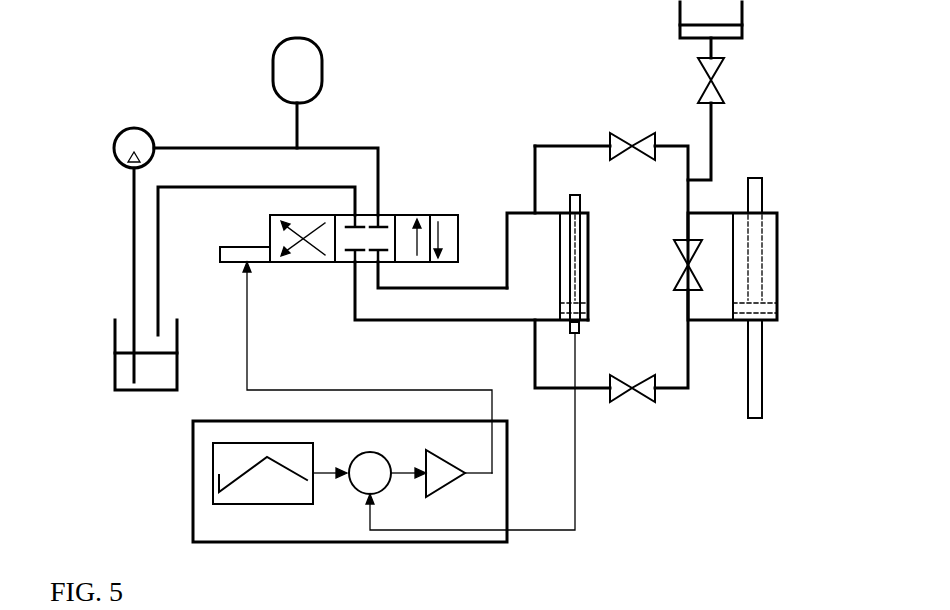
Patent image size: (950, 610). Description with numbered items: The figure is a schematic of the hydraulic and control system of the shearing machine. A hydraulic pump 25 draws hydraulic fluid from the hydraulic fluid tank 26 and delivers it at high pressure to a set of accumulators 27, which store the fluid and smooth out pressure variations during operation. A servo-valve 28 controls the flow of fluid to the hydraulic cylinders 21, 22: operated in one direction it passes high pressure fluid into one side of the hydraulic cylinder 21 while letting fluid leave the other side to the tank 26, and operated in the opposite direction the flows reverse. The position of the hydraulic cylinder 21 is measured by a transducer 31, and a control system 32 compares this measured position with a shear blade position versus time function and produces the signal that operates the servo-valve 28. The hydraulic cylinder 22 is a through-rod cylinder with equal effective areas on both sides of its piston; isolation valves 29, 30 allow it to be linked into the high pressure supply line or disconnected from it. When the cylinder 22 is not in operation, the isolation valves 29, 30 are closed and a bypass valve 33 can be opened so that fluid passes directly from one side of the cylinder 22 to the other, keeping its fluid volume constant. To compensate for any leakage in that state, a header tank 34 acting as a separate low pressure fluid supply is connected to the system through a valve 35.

The hydraulic cylinder 21 is at (568, 255).
The hydraulic cylinder 22 is at (752, 298).
The hydraulic pump 25 is at (105, 148).
The hydraulic fluid tank 26 is at (119, 355).
The set of accumulators 27 is at (270, 70).
The servo-valve 28 is at (339, 211).
The isolation valve 29 is at (632, 122).
The isolation valve 30 is at (632, 416).
The transducer 31 is at (502, 426).
The control system 32 is at (321, 481).
The bypass valve 33 is at (668, 265).
The header tank 34 is at (682, 25).
The valve 35 is at (730, 79).